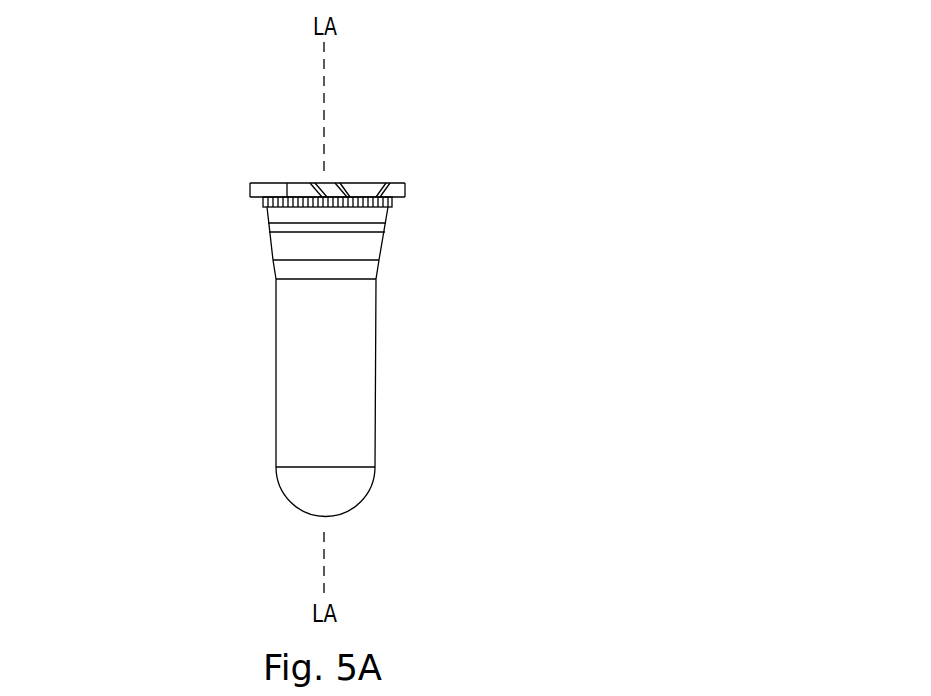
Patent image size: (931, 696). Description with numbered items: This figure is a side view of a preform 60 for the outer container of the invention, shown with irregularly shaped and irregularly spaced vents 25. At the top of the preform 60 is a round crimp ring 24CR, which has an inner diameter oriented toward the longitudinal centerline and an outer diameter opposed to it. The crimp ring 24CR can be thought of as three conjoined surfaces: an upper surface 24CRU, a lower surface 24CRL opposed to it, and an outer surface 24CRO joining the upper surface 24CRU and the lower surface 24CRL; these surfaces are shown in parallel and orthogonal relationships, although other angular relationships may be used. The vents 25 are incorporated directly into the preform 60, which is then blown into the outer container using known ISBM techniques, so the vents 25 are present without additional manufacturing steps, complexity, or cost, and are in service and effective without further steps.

The crimp ring 24CR is at (330, 158).
The upper surface 24CRU is at (395, 185).
The outer surface 24CRO is at (406, 188).
The lower surface 24CRL is at (393, 194).
The vents 25 is at (287, 183).
The preform 60 is at (442, 278).